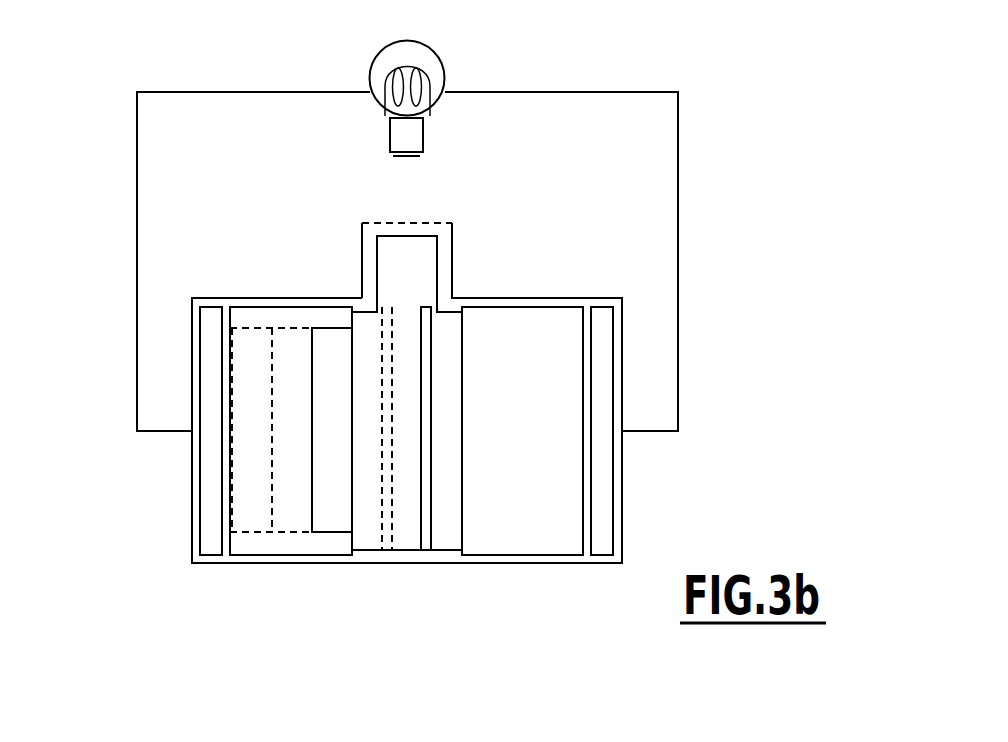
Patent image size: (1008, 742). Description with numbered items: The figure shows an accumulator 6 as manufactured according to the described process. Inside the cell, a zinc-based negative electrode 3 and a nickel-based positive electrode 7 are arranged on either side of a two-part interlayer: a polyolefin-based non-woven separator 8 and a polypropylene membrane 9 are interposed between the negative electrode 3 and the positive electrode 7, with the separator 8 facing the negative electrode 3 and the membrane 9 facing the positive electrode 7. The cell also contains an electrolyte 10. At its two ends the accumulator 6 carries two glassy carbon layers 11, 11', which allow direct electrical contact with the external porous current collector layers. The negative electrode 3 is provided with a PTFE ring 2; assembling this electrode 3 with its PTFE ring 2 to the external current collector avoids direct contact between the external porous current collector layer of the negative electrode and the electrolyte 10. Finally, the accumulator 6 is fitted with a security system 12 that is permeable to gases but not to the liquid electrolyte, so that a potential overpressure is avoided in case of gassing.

The PTFE ring 2 is at (323, 555).
The zinc-based negative electrode 3 is at (260, 555).
The accumulator 6 is at (227, 190).
The nickel-based positive electrode 7 is at (543, 557).
The polyolefin-based non-woven separator 8 is at (387, 552).
The polypropylene membrane 9 is at (428, 552).
The electrolyte 10 is at (407, 283).
The glassy carbon layer 11 is at (154, 431).
The glassy carbon layer 11' is at (675, 431).
The security system 12 is at (427, 222).